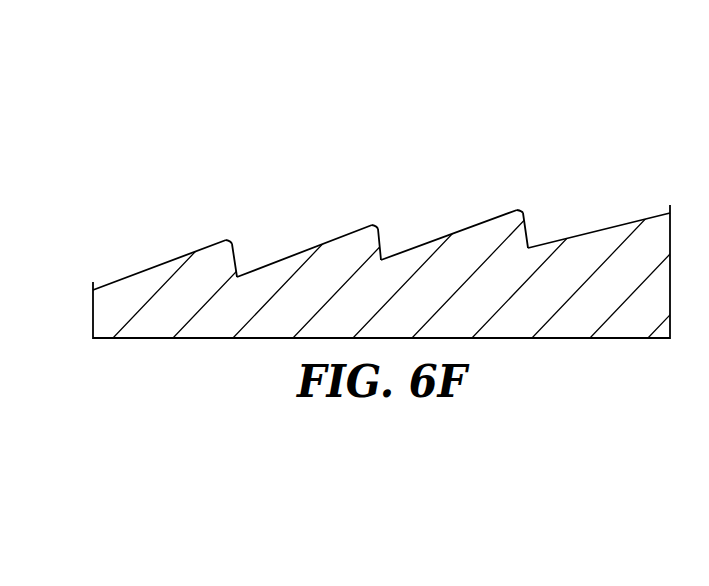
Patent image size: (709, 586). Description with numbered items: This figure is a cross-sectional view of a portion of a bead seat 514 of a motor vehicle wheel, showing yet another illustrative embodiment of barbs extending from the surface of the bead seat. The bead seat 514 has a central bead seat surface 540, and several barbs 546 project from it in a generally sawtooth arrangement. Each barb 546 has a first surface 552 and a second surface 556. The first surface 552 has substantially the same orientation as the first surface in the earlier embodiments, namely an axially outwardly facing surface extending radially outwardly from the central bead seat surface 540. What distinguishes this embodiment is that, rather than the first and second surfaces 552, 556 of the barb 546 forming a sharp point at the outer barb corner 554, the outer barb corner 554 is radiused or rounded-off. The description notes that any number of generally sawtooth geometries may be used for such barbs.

The bead seat 514 is at (355, 103).
The central bead seat surface 540 is at (381, 178).
The barb 546 is at (283, 176).
The first surface 552 is at (238, 262).
The outer barb corner 554 is at (236, 241).
The second surface 556 is at (193, 252).